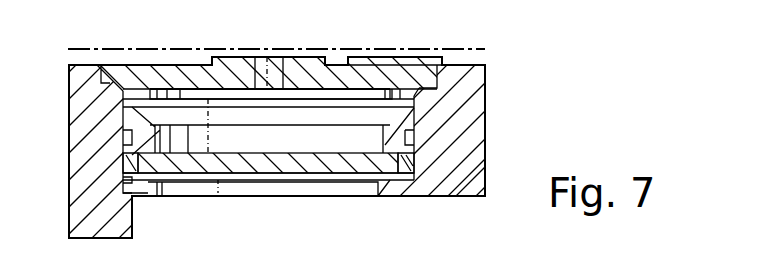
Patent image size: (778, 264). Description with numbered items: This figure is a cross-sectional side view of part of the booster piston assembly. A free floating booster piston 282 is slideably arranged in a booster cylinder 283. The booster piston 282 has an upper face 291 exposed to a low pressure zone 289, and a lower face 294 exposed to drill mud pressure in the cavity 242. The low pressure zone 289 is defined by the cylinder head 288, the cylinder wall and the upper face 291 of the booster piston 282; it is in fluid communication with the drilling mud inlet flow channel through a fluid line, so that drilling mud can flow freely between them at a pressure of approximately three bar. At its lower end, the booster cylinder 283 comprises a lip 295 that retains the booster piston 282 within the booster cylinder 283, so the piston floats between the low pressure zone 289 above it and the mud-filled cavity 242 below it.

The booster cylinder 283 is at (494, 131).
The cylinder head 288 is at (137, 65).
The low pressure zone 289 is at (217, 95).
The upper face 291 is at (322, 153).
The booster piston 282 is at (331, 180).
The lower face 294 is at (245, 175).
The lip 295 is at (148, 197).
The cavity 242 is at (324, 247).